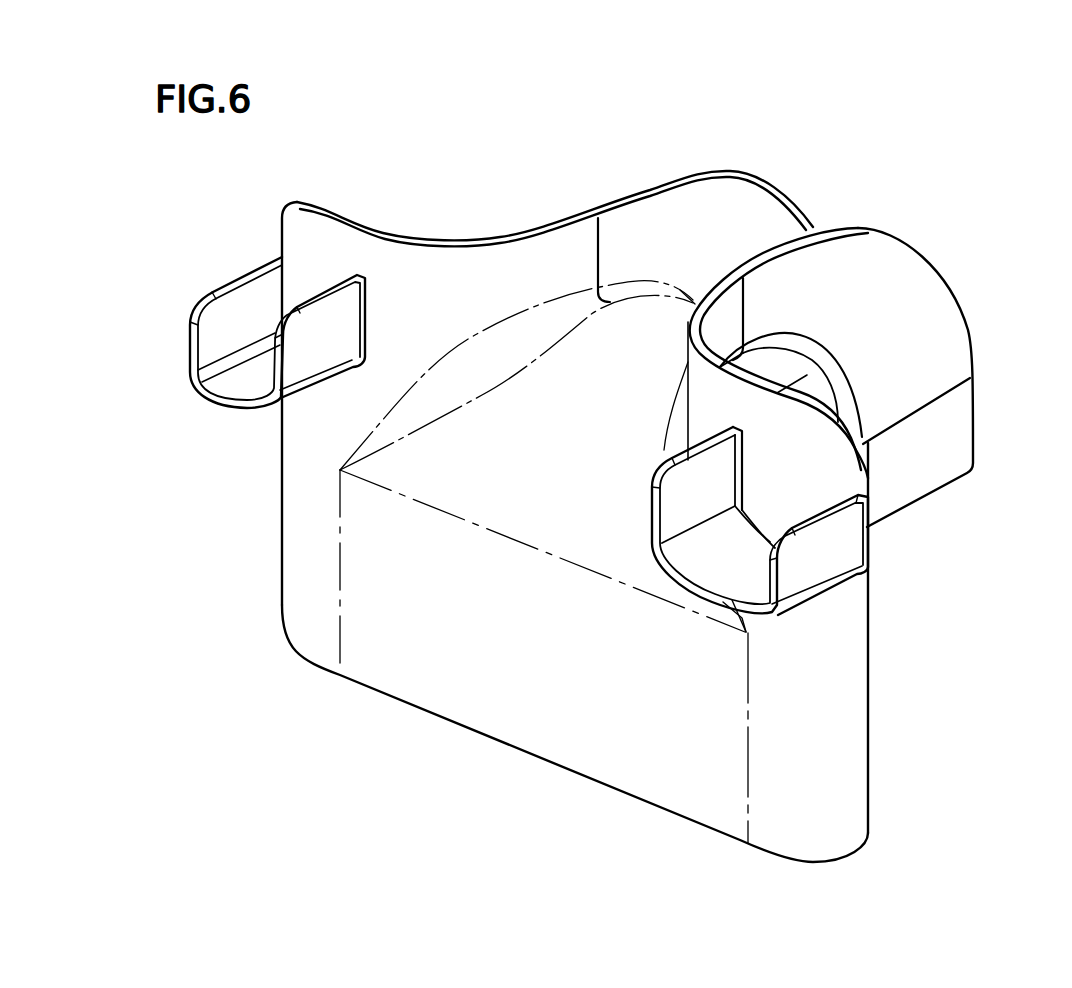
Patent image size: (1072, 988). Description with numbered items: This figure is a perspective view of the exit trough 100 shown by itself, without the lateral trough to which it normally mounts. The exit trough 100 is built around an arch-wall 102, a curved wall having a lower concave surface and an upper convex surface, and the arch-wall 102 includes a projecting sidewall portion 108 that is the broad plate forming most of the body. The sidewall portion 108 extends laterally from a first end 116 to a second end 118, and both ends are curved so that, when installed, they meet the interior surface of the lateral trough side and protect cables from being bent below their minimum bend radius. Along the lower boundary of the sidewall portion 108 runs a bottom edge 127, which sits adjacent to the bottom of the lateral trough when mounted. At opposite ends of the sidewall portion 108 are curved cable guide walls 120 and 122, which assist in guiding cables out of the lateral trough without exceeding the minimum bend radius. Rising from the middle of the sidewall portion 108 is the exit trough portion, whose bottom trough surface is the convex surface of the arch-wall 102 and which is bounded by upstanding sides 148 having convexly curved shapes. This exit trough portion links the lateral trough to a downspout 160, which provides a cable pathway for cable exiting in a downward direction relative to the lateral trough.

The exit trough 100 is at (774, 122).
The arch-wall 102 is at (556, 464).
The sidewall portion 108 is at (534, 662).
The first end 116 is at (292, 534).
The second end 118 is at (870, 726).
The curved cable guide wall 120 is at (232, 402).
The curved cable guide wall 122 is at (706, 598).
The bottom edge 127 is at (517, 748).
The upstanding sides 148 is at (878, 262).
The downspout 160 is at (922, 466).